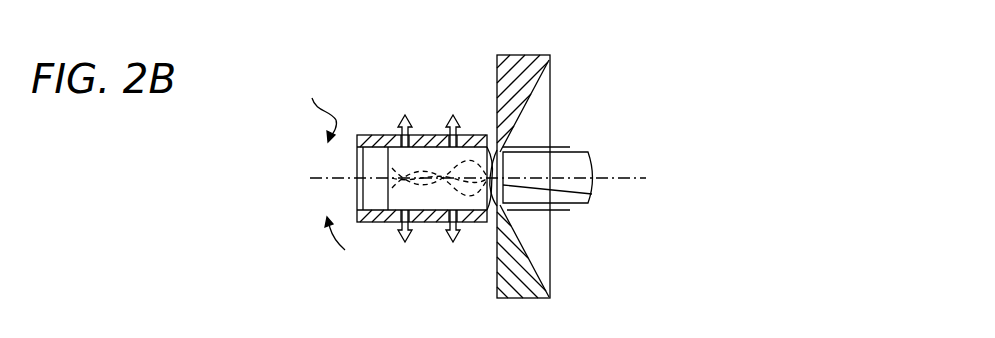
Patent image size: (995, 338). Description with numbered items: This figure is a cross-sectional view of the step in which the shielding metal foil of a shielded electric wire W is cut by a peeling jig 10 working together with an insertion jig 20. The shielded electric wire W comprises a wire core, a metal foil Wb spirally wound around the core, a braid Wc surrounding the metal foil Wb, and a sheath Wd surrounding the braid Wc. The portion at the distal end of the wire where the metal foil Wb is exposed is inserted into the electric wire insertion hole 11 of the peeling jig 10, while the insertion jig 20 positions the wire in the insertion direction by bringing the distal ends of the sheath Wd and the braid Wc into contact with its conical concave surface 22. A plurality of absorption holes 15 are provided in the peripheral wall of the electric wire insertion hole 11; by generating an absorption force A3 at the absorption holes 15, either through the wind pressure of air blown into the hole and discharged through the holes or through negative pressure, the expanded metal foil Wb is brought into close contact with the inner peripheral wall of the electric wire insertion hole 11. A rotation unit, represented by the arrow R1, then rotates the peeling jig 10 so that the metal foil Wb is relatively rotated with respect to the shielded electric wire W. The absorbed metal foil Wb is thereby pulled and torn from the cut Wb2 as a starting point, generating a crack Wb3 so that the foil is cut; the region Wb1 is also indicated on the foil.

The peeling jig 10 is at (370, 222).
The electric wire insertion hole 11 is at (357, 194).
The absorption hole 15 is at (403, 135).
The insertion jig 20 is at (553, 153).
The conical concave surface 22 is at (541, 96).
The absorption force A3 is at (428, 183).
The rotation unit R1 is at (322, 162).
The shielded electric wire W is at (588, 193).
The metal foil Wb is at (390, 195).
The lower joint region Wb1 is at (487, 198).
The cut Wb2 is at (493, 150).
The crack Wb3 is at (597, 197).
The braid Wc is at (548, 129).
The sheath Wd is at (583, 152).